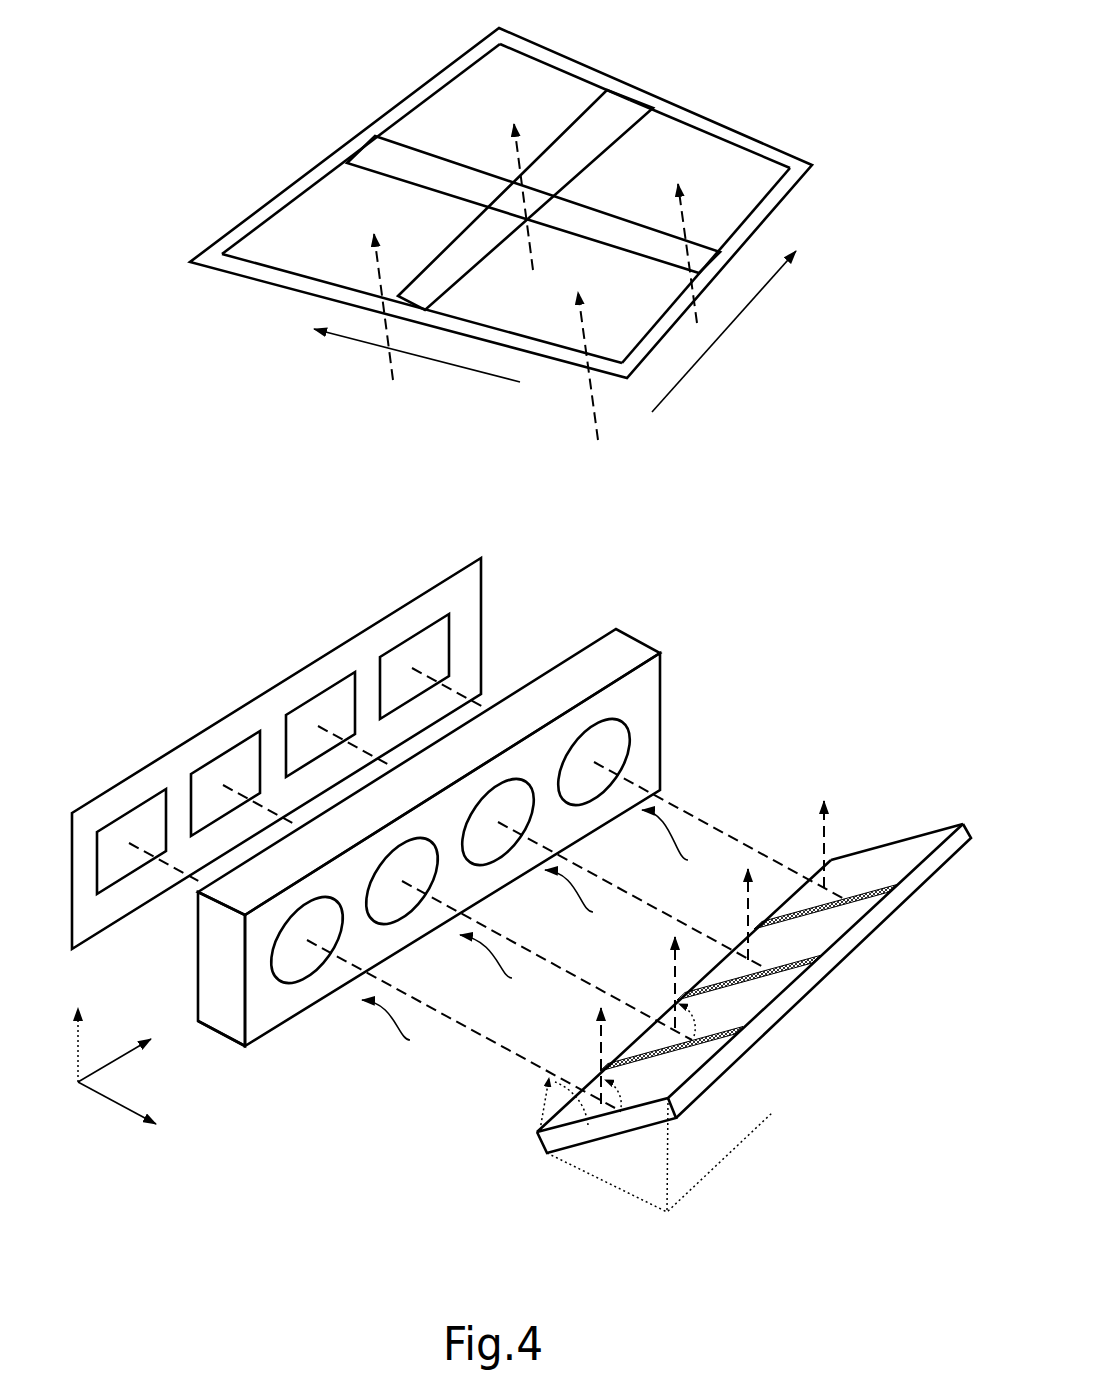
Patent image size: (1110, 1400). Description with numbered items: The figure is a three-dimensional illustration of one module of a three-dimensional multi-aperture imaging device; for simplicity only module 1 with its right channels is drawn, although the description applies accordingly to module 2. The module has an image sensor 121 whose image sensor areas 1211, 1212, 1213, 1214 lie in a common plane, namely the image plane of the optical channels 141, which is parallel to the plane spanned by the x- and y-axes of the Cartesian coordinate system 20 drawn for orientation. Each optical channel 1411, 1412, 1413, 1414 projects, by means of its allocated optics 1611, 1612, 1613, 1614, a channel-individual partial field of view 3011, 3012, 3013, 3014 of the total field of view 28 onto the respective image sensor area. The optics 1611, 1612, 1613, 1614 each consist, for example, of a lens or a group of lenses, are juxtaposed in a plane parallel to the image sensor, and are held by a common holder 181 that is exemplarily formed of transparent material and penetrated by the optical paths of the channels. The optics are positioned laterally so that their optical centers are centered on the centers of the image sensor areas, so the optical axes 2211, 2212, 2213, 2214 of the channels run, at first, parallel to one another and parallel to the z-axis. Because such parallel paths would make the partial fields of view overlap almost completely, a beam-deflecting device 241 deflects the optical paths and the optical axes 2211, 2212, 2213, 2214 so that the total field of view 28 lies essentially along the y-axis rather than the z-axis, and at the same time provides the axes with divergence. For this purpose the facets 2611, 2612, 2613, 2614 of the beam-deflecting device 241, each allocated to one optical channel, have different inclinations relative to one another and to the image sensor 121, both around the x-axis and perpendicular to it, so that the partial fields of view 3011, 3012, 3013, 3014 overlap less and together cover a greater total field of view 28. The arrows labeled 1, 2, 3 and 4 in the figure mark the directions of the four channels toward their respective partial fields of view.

The total field of view 28 is at (413, 92).
The partial field of view 3011 is at (280, 203).
The partial field of view 3012 is at (568, 60).
The partial field of view 3013 is at (647, 340).
The partial field of view 3014 is at (707, 125).
The module 1 is at (499, 662).
The module 2 is at (638, 656).
The viewing direction of channel 3 is at (643, 532).
The viewing direction of channel 4 is at (763, 527).
The image sensor 121 is at (447, 578).
The image sensor area 1211 is at (127, 810).
The image sensor area 1212 is at (220, 752).
The image sensor area 1213 is at (313, 695).
The image sensor area 1214 is at (409, 636).
The optical channels 141 is at (656, 630).
The optical channel 1411 is at (416, 1031).
The optical channel 1412 is at (508, 968).
The optical channel 1413 is at (590, 901).
The optical channel 1414 is at (688, 845).
The optics 1611 is at (312, 983).
The optics 1612 is at (421, 906).
The optics 1613 is at (494, 866).
The optics 1614 is at (590, 806).
The holder 181 is at (220, 1036).
The Cartesian coordinate system 20 is at (78, 1085).
The optical axis 2211 is at (508, 1050).
The optical axis 2212 is at (587, 985).
The optical axis 2213 is at (658, 917).
The optical axis 2214 is at (692, 808).
The beam-deflecting device 241 is at (637, 1140).
The facet 2611 is at (675, 1067).
The facet 2612 is at (761, 994).
The facet 2613 is at (835, 929).
The facet 2614 is at (898, 857).